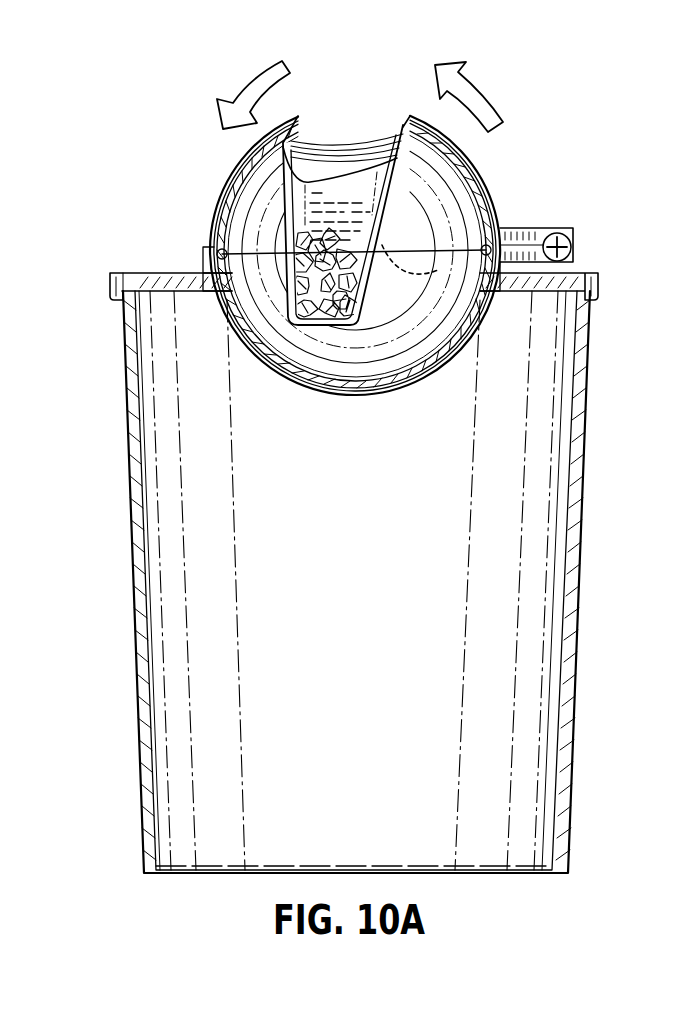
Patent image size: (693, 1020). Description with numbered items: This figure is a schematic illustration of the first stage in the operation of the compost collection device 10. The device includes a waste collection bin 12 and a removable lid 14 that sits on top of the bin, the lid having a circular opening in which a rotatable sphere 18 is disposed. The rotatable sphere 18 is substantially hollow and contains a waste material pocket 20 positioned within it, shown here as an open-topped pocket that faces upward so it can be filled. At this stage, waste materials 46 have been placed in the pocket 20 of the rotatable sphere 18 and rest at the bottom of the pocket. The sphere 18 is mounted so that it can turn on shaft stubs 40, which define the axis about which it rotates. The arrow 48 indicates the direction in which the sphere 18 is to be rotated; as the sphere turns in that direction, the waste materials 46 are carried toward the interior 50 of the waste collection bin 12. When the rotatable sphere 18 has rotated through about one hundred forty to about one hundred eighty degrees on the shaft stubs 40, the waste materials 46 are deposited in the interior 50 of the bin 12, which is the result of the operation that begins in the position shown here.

The compost collection device 10 is at (172, 198).
The waste collection bin 12 is at (538, 458).
The removable lid 14 is at (585, 273).
The rotatable sphere 18 is at (453, 205).
The waste material pocket 20 is at (343, 178).
The shaft stubs 40 is at (354, 260).
The waste materials 46 is at (322, 317).
The arrow 48 is at (283, 62).
The interior 50 is at (176, 685).